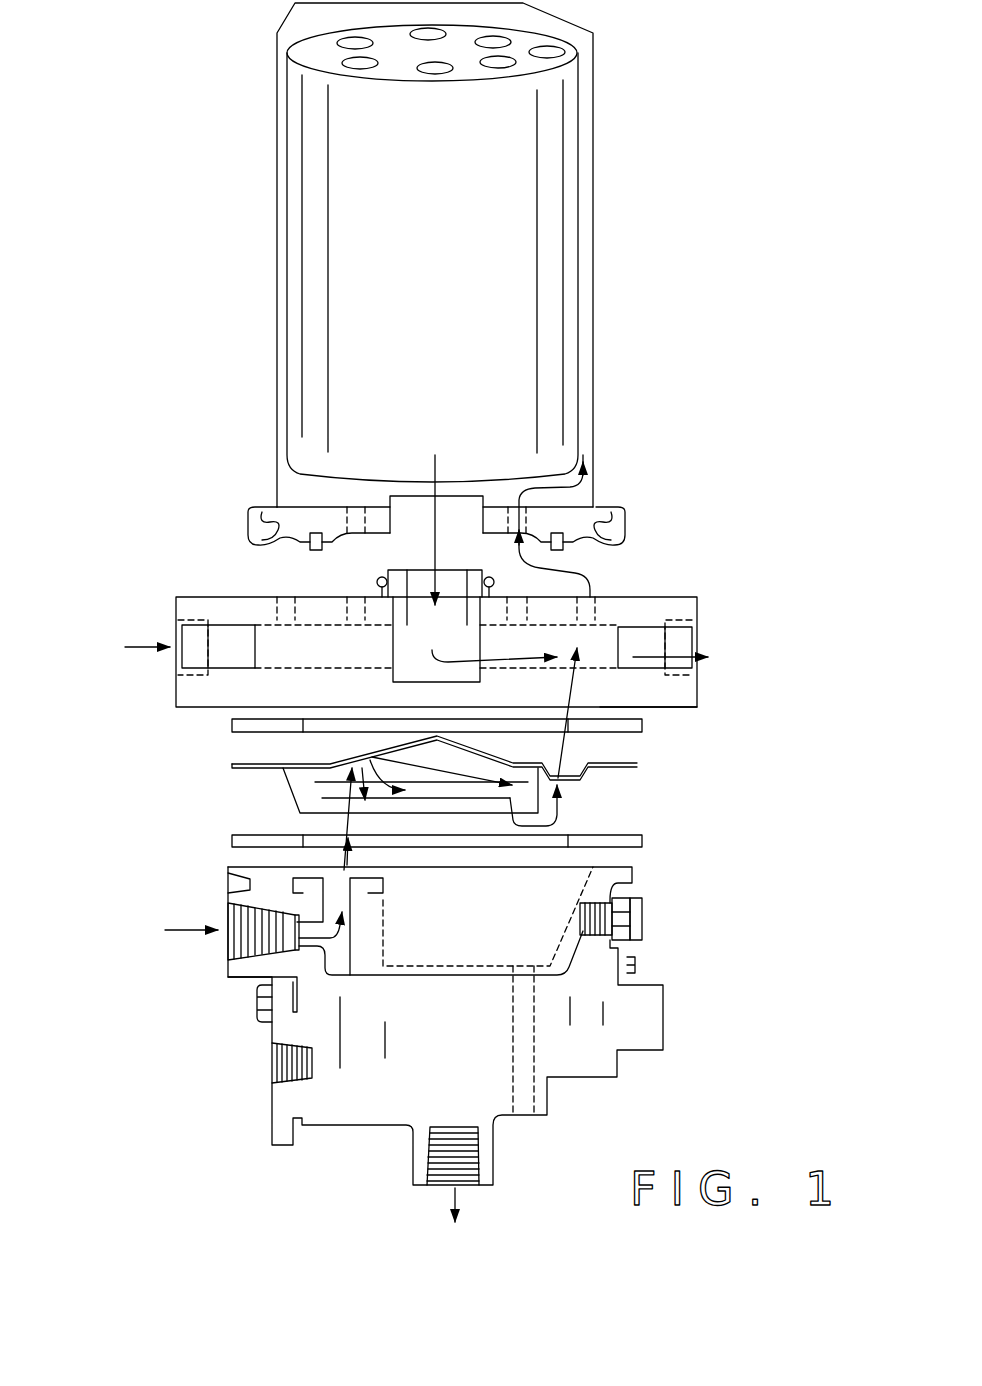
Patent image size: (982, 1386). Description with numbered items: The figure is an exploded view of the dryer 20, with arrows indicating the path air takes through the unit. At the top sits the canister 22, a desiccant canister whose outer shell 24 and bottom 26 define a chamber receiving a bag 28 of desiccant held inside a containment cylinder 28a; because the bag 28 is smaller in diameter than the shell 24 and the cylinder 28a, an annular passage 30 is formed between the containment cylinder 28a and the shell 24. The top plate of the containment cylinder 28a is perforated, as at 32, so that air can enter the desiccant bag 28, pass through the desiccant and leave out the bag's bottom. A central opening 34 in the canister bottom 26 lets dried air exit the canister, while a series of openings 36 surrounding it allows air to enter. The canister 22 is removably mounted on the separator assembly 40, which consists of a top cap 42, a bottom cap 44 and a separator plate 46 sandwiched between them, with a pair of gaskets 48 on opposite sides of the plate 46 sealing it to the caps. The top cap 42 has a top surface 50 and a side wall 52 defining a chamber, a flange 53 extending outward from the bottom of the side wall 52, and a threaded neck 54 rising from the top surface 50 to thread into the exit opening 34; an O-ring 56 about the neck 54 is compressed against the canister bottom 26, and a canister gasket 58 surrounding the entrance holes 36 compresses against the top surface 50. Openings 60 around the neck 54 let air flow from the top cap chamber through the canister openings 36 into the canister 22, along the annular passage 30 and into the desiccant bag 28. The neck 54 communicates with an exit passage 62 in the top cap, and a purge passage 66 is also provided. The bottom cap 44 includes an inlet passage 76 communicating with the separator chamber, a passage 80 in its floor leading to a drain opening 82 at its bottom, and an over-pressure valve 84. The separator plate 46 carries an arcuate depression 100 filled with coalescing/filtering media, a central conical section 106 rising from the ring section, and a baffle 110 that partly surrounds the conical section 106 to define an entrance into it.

The dryer 20 is at (717, 488).
The canister 22 is at (447, 298).
The outer shell 24 is at (593, 297).
The bottom 26 is at (433, 543).
The bag of desiccant 28 is at (449, 358).
The containment cylinder 28a is at (578, 365).
The annular passage 30 is at (498, 241).
The perforations 32 is at (435, 68).
The central opening 34 is at (465, 510).
The openings 36 is at (358, 525).
The separator assembly 40 is at (186, 1148).
The top cap 42 is at (452, 593).
The bottom cap 44 is at (470, 1039).
The separator plate 46 is at (431, 759).
The gaskets 48 is at (642, 725).
The top surface 50 is at (632, 575).
The side wall 52 is at (700, 607).
The flange 53 is at (688, 707).
The threaded neck 54 is at (377, 580).
The O-ring 56 is at (380, 593).
The gasket 58 is at (310, 545).
The openings 60 is at (508, 600).
The exit passage 62 is at (683, 645).
The purge passage 66 is at (188, 660).
The inlet passage 76 is at (225, 937).
The passage 80 is at (532, 1022).
The drain opening 82 is at (479, 1196).
The over-pressure valve 84 is at (643, 925).
The arcuate depression 100 is at (567, 765).
The central conical section 106 is at (400, 757).
The baffle 110 is at (290, 795).